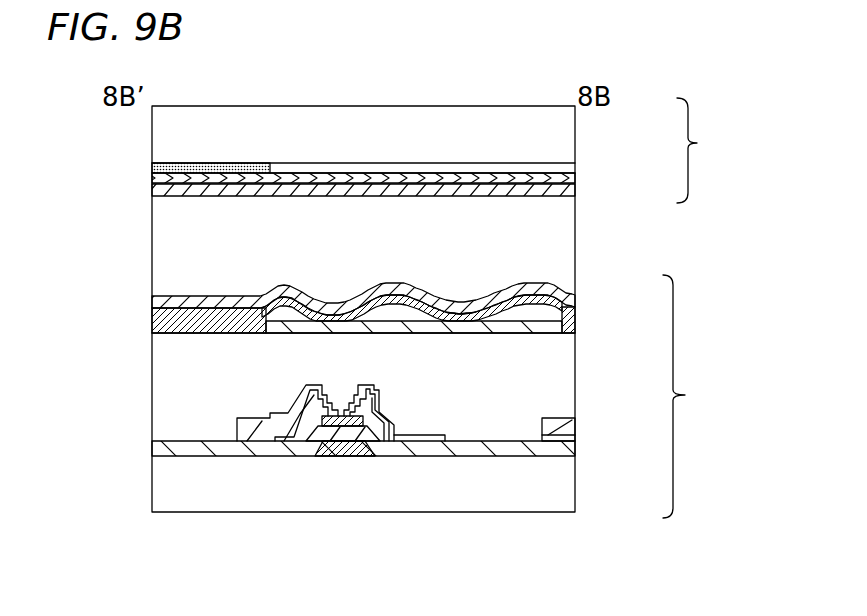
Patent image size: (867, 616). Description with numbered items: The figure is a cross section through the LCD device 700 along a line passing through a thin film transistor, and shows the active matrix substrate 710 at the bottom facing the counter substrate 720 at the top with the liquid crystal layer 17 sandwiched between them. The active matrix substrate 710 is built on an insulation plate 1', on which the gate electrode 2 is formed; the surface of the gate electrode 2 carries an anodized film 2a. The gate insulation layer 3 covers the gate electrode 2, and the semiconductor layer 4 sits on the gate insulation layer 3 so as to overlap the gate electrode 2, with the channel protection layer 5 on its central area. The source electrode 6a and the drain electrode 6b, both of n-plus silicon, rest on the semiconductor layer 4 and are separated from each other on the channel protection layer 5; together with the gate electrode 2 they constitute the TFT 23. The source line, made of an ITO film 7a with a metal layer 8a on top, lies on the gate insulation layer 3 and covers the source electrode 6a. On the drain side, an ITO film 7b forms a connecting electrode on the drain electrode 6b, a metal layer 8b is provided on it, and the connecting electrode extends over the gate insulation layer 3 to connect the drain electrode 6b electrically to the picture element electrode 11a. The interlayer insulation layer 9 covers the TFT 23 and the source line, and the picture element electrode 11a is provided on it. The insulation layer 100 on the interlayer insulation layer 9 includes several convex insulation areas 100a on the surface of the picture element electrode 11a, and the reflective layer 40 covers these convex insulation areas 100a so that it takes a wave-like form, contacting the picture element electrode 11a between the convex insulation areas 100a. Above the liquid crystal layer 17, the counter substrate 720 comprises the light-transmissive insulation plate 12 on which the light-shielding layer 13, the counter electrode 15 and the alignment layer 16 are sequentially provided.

The LCD device 700 is at (627, 30).
The active matrix substrate 710 is at (701, 396).
The counter substrate 720 is at (714, 150).
The light-transmissive insulation plate 12 is at (482, 137).
The light-shielding layer 13 is at (218, 163).
The counter electrode 15 is at (577, 176).
The alignment layer 16 is at (577, 285).
The liquid crystal layer 17 is at (178, 221).
The insulation layer 100 is at (577, 311).
The convex insulation areas 100a is at (387, 284).
The reflective layer 40 is at (412, 281).
The picture element electrode 11a is at (536, 331).
The interlayer insulation layer 9 is at (564, 373).
The gate insulation layer 3 is at (158, 451).
The gate electrode 2 is at (347, 441).
The anodized film 2a is at (362, 443).
The semiconductor layer 4 is at (332, 426).
The channel protection layer 5 is at (340, 413).
The source electrode 6a is at (302, 441).
The drain electrode 6b is at (378, 441).
The ITO film 7a is at (268, 420).
The ITO film 7b is at (397, 441).
The metal layer 8a is at (243, 430).
The metal layer 8b is at (380, 400).
The TFT 23 is at (262, 406).
The insulation plate 1' is at (392, 484).